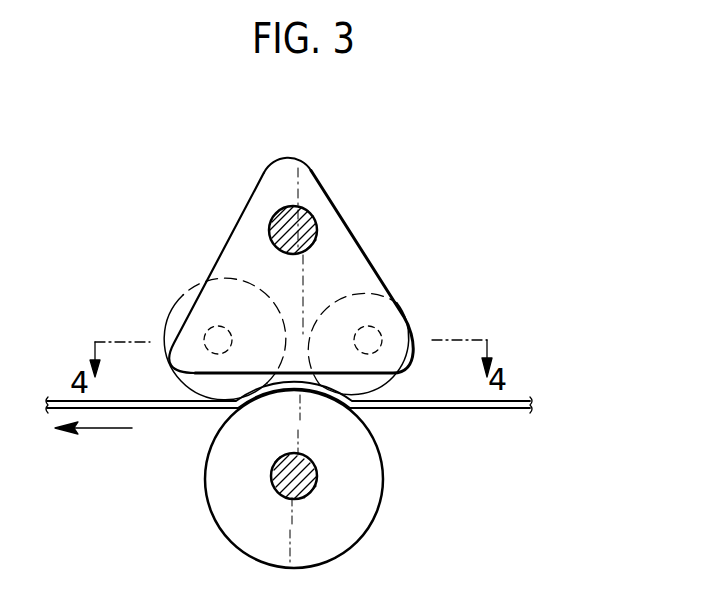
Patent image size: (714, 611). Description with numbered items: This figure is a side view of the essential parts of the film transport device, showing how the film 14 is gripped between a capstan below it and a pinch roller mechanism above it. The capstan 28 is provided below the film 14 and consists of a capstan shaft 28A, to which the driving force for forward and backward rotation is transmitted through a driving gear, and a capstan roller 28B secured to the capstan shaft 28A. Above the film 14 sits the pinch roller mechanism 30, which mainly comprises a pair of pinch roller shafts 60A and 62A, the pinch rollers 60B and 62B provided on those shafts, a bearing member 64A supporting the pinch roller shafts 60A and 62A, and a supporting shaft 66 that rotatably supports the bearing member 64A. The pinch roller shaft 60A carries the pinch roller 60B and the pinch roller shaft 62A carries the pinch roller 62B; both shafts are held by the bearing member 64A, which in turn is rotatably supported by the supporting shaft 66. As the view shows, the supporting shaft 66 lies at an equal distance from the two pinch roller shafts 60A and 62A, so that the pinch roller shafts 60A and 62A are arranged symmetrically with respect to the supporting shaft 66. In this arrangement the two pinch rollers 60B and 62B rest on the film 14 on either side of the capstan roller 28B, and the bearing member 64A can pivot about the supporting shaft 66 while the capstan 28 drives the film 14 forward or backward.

The film 14 is at (515, 400).
The capstan 28 is at (308, 483).
The capstan shaft 28A is at (273, 488).
The capstan roller 28B is at (363, 535).
The pinch roller mechanism 30 is at (303, 257).
The pinch roller shaft 60A is at (368, 326).
The pinch roller 60B is at (418, 312).
The pinch roller shaft 62A is at (222, 326).
The pinch roller 62B is at (197, 293).
The bearing member 64A is at (300, 158).
The supporting shaft 66 is at (318, 228).